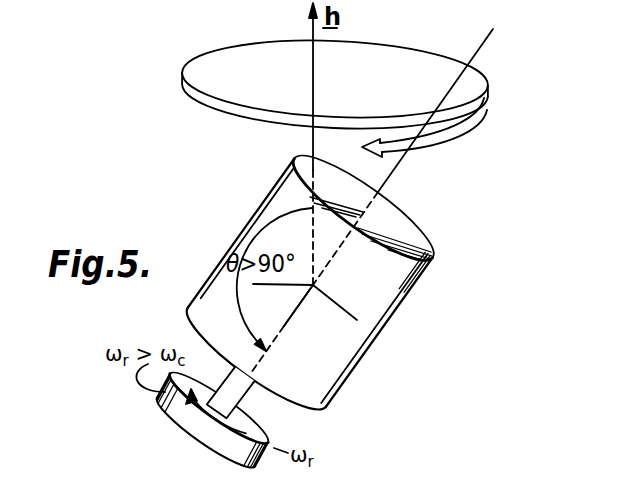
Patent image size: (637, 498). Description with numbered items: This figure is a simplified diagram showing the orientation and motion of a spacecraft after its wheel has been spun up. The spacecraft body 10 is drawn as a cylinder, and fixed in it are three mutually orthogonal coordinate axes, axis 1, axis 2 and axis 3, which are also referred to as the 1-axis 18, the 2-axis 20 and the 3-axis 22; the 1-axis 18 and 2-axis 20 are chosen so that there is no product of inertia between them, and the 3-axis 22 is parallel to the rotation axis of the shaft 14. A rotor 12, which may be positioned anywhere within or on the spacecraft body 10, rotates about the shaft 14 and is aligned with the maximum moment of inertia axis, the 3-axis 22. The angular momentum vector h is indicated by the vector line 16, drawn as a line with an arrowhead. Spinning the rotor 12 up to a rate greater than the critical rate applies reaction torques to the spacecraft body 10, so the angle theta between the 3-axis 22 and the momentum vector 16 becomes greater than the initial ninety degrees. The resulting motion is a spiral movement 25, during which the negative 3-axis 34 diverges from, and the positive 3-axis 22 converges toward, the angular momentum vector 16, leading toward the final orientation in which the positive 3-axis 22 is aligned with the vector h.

The spacecraft body 10 is at (364, 357).
The rotor 12 is at (187, 437).
The shaft 14 is at (256, 392).
The angular momentum vector 16 is at (311, 28).
The 1-axis 18 is at (338, 304).
The 2-axis 20 is at (287, 286).
The 3-axis 22 is at (300, 306).
The spiral movement 25 is at (184, 92).
The negative 3-axis 34 is at (480, 48).
The axis 1 is at (350, 329).
The axis 2 is at (255, 299).
The axis 3 is at (363, 190).